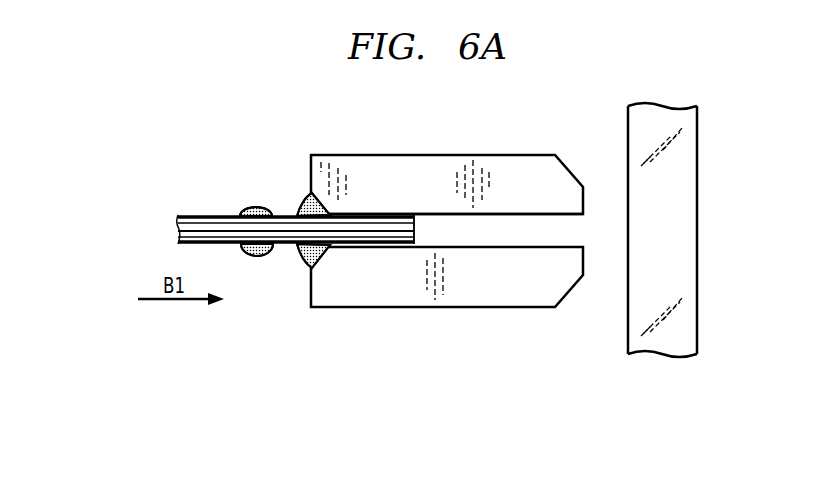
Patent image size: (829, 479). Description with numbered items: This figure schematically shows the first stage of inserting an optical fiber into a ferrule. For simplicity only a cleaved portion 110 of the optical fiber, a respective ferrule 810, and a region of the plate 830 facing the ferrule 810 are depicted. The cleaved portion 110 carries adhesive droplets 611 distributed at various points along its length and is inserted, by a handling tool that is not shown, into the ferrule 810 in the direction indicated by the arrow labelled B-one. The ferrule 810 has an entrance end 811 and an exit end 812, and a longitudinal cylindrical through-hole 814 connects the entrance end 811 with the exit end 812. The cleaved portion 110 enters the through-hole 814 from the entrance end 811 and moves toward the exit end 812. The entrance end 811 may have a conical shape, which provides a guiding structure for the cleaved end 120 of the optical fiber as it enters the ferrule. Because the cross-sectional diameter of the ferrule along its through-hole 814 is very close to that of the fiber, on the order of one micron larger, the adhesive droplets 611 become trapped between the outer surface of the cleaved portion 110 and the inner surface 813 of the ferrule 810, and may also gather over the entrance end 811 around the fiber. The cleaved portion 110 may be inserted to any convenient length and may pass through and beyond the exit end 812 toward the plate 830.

The cleaved portion of the optical fiber 110 is at (208, 216).
The cleaved end of the optical fiber 120 is at (415, 237).
The adhesive droplets 611 is at (307, 200).
The ferrule 810 is at (482, 153).
The entrance end 811 is at (307, 196).
The exit end 812 is at (582, 233).
The inner surface of the ferrule 813 is at (398, 213).
The through-hole 814 is at (528, 233).
The plate 830 is at (685, 158).